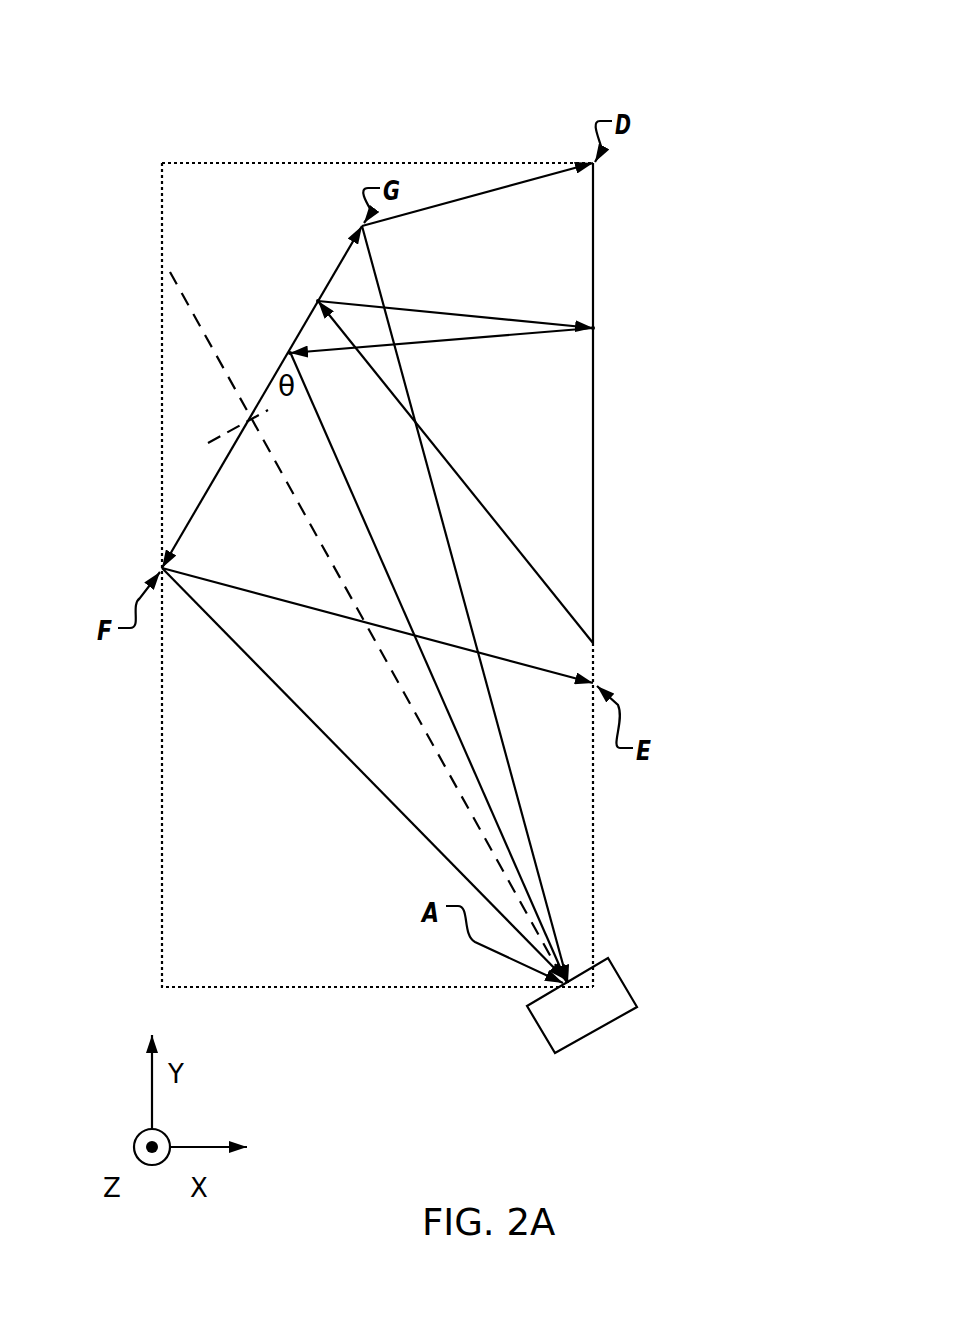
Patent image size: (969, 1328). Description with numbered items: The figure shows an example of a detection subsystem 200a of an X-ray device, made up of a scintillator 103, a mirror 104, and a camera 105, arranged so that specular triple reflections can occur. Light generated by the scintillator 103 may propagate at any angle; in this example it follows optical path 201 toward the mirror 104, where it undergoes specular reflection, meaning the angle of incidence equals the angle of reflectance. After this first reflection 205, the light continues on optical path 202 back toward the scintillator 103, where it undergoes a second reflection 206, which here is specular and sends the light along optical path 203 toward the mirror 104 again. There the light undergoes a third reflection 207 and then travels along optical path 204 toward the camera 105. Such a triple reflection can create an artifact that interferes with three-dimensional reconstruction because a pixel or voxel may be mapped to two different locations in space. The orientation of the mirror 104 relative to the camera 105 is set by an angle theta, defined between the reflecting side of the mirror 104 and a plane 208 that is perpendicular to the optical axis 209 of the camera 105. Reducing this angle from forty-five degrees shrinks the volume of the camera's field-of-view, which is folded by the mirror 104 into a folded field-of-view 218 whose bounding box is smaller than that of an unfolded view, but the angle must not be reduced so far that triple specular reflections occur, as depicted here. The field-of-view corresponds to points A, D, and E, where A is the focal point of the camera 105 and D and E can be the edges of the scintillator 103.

The detection subsystem 200a is at (112, 66).
The mirror 104 is at (345, 247).
The scintillator 103 is at (594, 537).
The camera 105 is at (627, 985).
The optical path 201 is at (528, 562).
The optical path 202 is at (538, 322).
The optical path 203 is at (538, 340).
The optical path 204 is at (340, 462).
The first reflection 205 is at (317, 300).
The second reflection 206 is at (595, 327).
The third reflection 207 is at (289, 352).
The plane 208 is at (230, 433).
The optical axis 209 is at (398, 684).
The folded field-of-view 218 is at (162, 800).